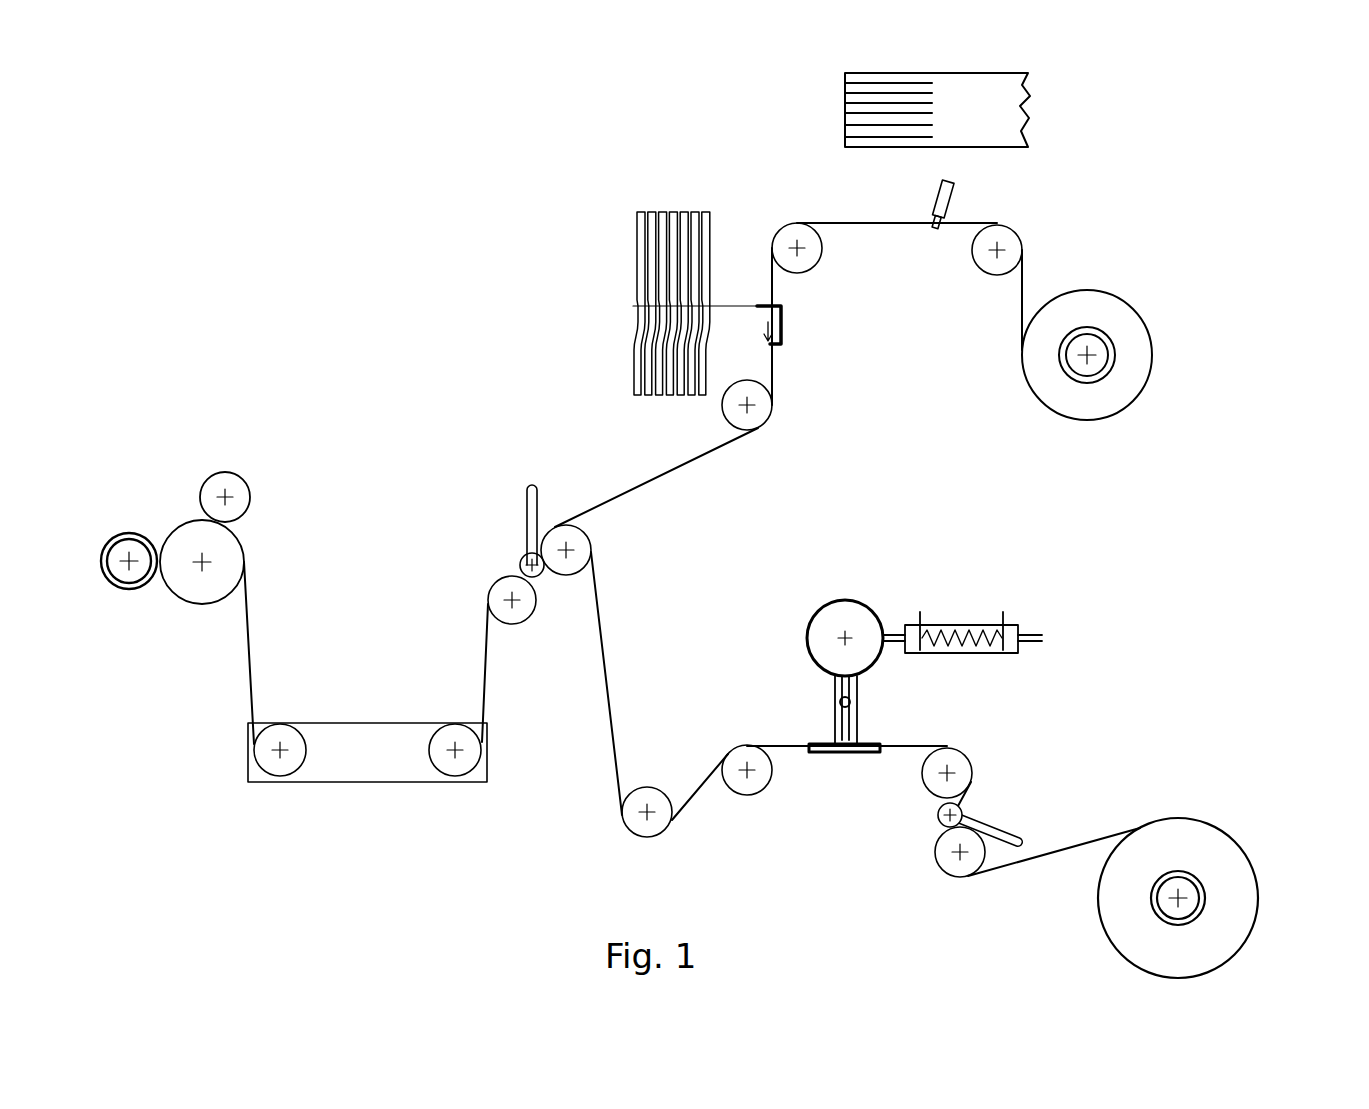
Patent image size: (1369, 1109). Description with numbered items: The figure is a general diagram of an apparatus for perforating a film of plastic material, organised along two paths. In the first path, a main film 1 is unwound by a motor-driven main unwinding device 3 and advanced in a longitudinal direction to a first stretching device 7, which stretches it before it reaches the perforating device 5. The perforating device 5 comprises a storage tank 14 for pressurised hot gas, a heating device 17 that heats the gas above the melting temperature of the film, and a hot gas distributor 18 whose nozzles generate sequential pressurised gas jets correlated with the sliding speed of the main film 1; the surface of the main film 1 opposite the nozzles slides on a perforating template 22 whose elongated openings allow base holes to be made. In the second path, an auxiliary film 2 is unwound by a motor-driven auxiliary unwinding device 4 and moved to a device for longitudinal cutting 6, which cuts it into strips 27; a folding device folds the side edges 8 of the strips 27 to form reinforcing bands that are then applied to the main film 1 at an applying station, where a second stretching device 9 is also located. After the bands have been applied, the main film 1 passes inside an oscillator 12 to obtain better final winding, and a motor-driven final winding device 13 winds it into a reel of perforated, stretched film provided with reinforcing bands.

The main film 1 is at (247, 648).
The auxiliary film 2 is at (1023, 277).
The main unwinding device 3 is at (1230, 863).
The auxiliary unwinding device 4 is at (1135, 358).
The perforating device 5 is at (897, 607).
The device for longitudinal cutting 6 is at (1033, 172).
The first stretching device 7 is at (938, 814).
The side edges 8 is at (757, 268).
The second stretching device 9 is at (524, 574).
The oscillator 12 is at (478, 781).
The final winding device 13 is at (187, 532).
The storage tank 14 is at (822, 625).
The heating device 17 is at (1018, 622).
The hot gas distributor 18 is at (875, 712).
The perforating template 22 is at (817, 752).
The strips 27 is at (637, 350).